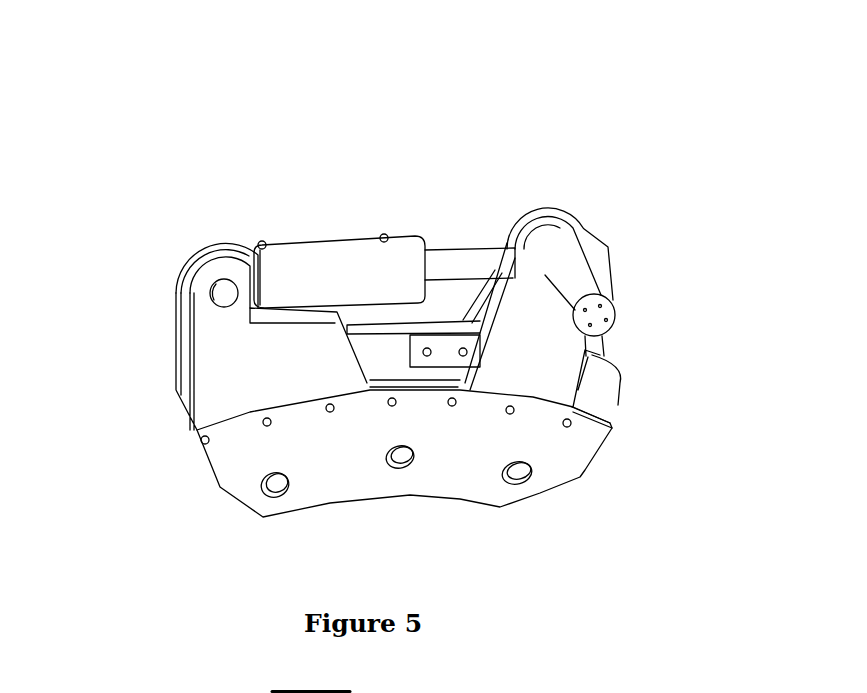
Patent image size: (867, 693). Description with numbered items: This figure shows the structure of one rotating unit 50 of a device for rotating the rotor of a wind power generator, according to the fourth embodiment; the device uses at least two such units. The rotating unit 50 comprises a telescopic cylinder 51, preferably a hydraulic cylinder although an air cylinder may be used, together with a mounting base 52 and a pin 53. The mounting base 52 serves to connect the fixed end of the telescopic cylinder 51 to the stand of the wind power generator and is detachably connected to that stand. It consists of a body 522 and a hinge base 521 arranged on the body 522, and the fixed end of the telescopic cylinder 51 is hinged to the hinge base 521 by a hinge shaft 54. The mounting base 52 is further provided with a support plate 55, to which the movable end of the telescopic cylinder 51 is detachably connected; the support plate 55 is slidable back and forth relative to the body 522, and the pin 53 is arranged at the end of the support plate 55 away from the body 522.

The rotating unit 50 is at (526, 83).
The telescopic cylinder 51 is at (345, 262).
The mounting base 52 is at (93, 235).
The hinge base 521 is at (230, 333).
The body 522 is at (232, 475).
The pin 53 is at (597, 295).
The hinge shaft 54 is at (222, 295).
The support plate 55 is at (557, 222).